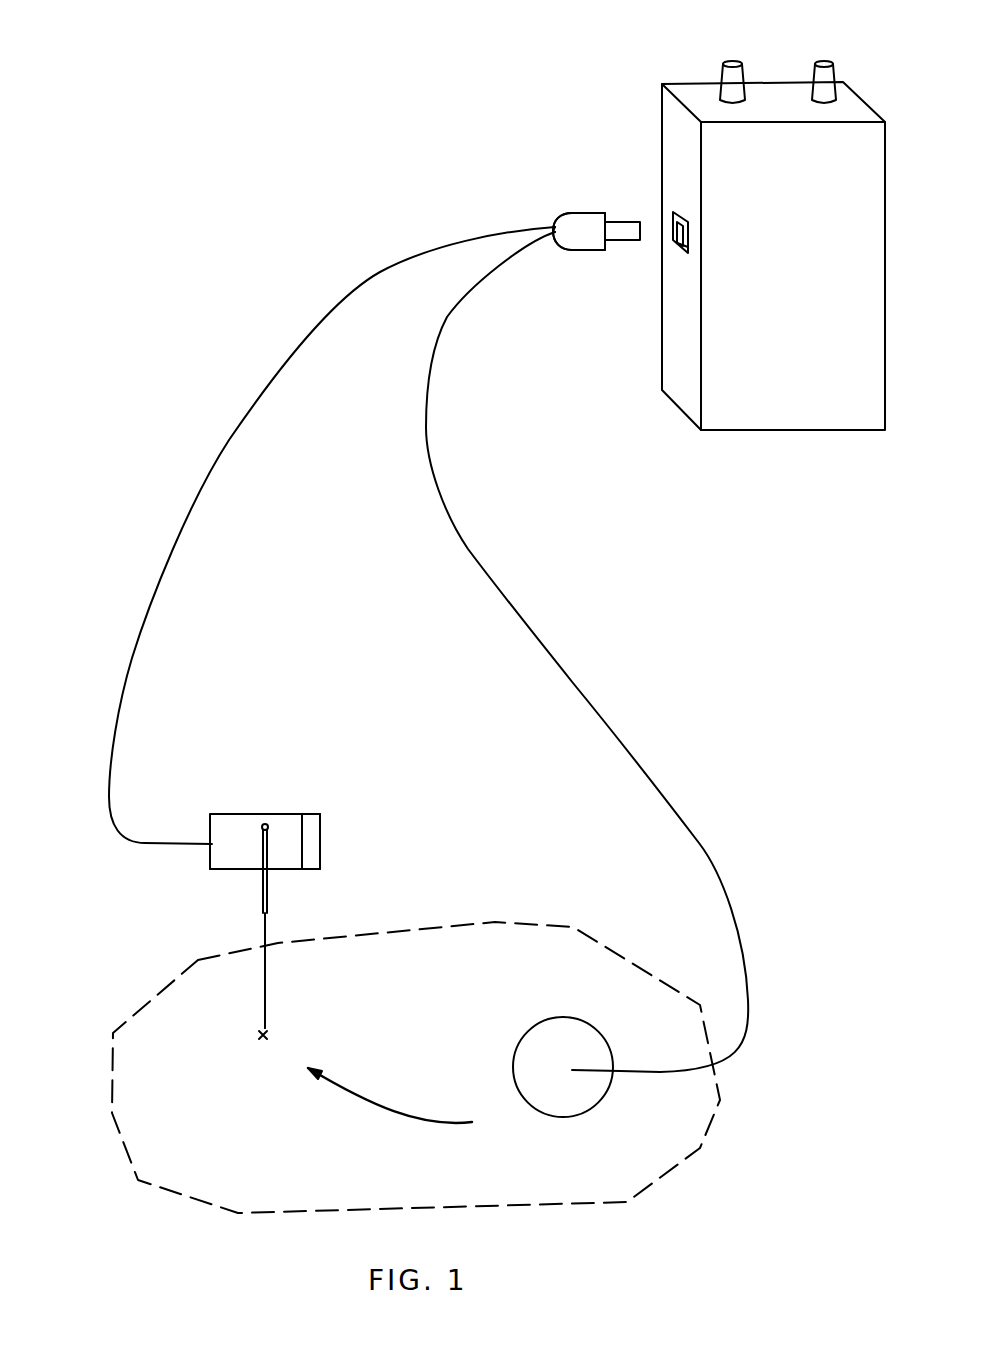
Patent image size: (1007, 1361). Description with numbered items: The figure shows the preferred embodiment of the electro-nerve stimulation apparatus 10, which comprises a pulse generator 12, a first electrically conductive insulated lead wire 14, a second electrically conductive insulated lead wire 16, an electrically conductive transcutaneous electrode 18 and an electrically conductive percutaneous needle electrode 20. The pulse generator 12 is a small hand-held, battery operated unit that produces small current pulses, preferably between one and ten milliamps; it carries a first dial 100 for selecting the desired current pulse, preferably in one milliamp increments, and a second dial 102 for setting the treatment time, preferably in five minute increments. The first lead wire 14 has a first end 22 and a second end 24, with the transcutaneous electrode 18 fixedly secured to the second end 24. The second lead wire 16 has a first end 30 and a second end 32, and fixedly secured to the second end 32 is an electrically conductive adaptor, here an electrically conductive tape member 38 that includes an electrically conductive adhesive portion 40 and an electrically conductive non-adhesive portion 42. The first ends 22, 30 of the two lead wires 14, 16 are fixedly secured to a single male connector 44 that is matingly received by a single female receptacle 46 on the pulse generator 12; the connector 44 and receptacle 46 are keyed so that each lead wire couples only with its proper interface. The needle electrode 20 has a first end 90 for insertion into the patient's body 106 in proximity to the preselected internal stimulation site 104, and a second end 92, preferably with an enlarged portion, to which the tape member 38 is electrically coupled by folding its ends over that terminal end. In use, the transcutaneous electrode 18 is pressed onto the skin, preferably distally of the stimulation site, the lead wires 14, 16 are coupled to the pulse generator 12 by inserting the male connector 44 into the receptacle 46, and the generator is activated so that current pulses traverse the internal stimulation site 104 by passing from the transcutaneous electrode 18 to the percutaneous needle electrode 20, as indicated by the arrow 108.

The electro-nerve stimulation apparatus 10 is at (360, 157).
The pulse generator 12 is at (756, 253).
The first lead wire 14 is at (587, 652).
The second lead wire 16 is at (201, 458).
The transcutaneous electrode 18 is at (568, 1097).
The percutaneous needle electrode 20 is at (301, 929).
The first end of first lead wire 22 is at (555, 232).
The second end of first lead wire 24 is at (582, 1067).
The first end of second lead wire 30 is at (551, 235).
The second end of second lead wire 32 is at (262, 838).
The electrically conductive tape member 38 is at (285, 817).
The electrically conductive adhesive portion 40 is at (230, 862).
The electrically conductive non-adhesive portion 42 is at (313, 840).
The single male connector 44 is at (583, 222).
The single mating female receptacle 46 is at (677, 245).
The first end of needle electrode 90 is at (265, 1028).
The second end of needle electrode 92 is at (264, 824).
The first dial 100 is at (733, 61).
The second dial 102 is at (824, 61).
The internal stimulation site 104 is at (262, 1041).
The patient's body 106 is at (205, 1185).
The arrow 108 is at (372, 1113).